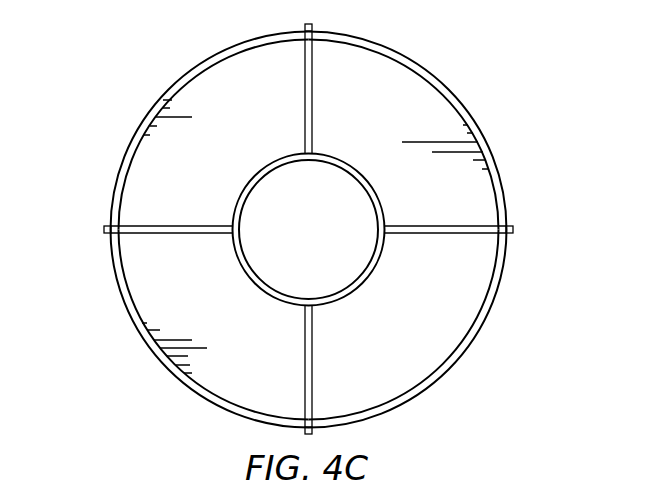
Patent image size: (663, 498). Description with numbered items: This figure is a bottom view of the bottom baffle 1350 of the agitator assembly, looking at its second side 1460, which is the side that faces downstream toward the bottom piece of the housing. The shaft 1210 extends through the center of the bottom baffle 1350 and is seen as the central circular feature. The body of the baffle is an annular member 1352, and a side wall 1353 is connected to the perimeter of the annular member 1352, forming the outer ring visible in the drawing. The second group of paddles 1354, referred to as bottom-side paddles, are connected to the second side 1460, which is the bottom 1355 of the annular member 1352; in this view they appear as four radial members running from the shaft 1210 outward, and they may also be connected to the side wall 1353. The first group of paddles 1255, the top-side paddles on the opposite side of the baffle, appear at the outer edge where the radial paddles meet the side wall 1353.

The bottom baffle 1350 is at (116, 58).
The second side 1460 is at (392, 84).
The side wall 1353 is at (466, 107).
The annular member 1352 is at (158, 305).
The bottom 1355 is at (463, 295).
The shaft 1210 is at (273, 207).
The second group of paddles 1354 is at (303, 62).
The first group of paddles 1255 is at (311, 27).